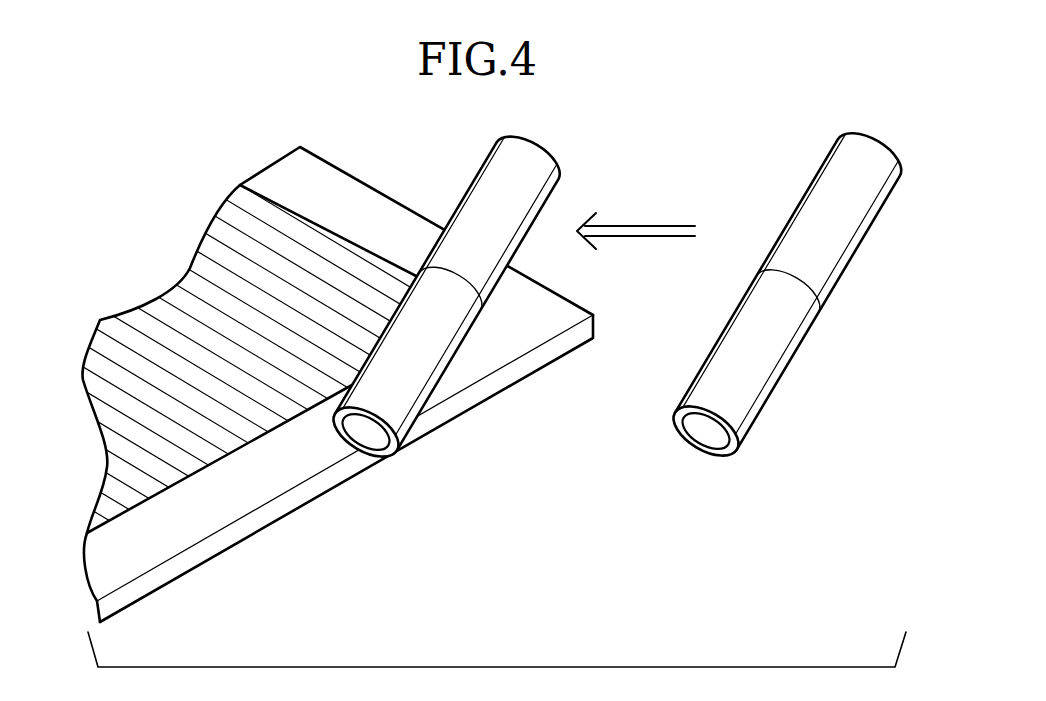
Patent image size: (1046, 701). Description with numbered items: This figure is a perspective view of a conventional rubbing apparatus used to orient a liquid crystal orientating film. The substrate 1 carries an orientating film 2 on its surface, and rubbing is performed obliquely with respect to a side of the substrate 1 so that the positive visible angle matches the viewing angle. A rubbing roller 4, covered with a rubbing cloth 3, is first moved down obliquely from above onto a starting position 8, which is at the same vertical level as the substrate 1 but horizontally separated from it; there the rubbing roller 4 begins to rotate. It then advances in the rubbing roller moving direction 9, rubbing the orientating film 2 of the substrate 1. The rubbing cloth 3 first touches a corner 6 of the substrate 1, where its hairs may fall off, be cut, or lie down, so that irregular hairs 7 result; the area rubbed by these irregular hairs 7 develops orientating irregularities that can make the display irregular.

The substrate 1 is at (292, 182).
The orientating film 2 is at (193, 295).
The rubbing cloth 3 is at (390, 456).
The rubbing roller 4 is at (360, 440).
The corner 6 is at (593, 313).
The irregular hairs 7 is at (457, 268).
The starting position 8 is at (815, 210).
The rubbing roller moving direction 9 is at (637, 226).